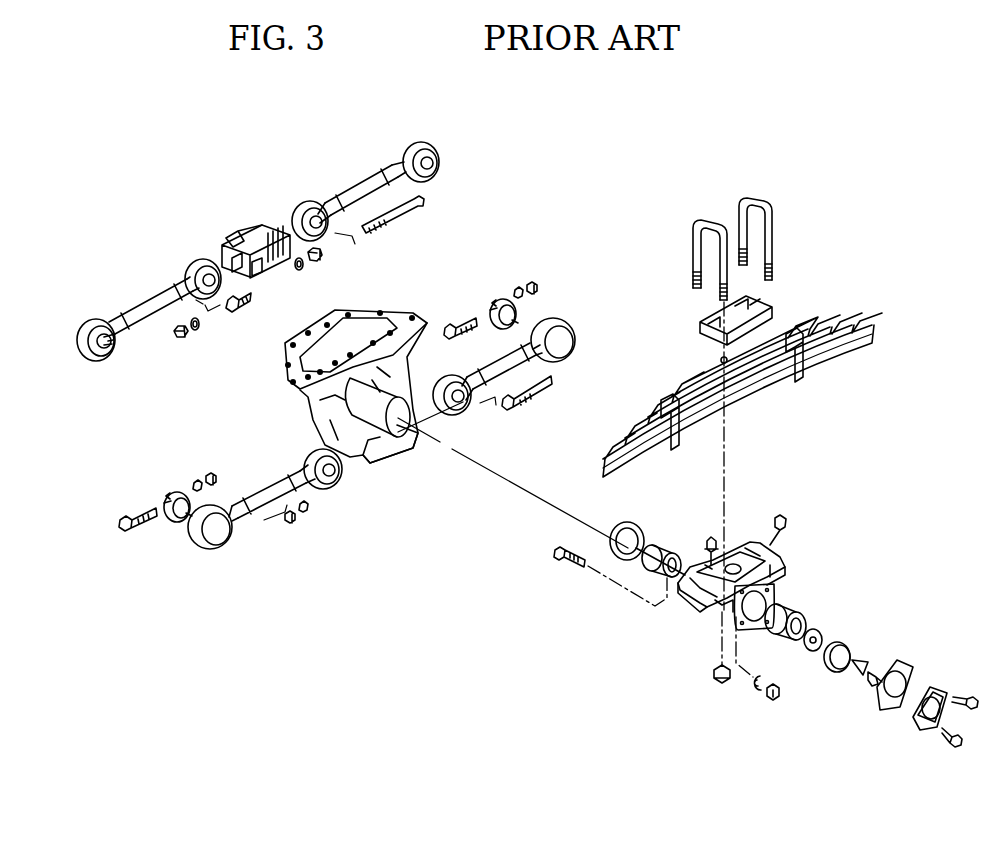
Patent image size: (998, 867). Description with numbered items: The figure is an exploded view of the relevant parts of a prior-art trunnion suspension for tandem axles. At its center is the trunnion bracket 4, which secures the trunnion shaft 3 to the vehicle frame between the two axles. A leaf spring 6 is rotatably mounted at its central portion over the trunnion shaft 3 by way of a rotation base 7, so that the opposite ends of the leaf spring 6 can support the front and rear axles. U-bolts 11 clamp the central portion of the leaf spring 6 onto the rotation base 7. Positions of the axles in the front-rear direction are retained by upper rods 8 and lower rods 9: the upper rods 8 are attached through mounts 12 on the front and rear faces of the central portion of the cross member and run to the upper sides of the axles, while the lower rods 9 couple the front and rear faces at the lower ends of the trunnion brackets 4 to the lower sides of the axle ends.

The trunnion shaft 3 is at (327, 413).
The trunnion bracket 4 is at (395, 348).
The leaf spring 6 is at (750, 388).
The rotation base 7 is at (786, 572).
The upper rod 8 is at (147, 310).
The lower rod 9 is at (501, 372).
The U-bolt 11 is at (702, 218).
The mount 12 is at (227, 250).